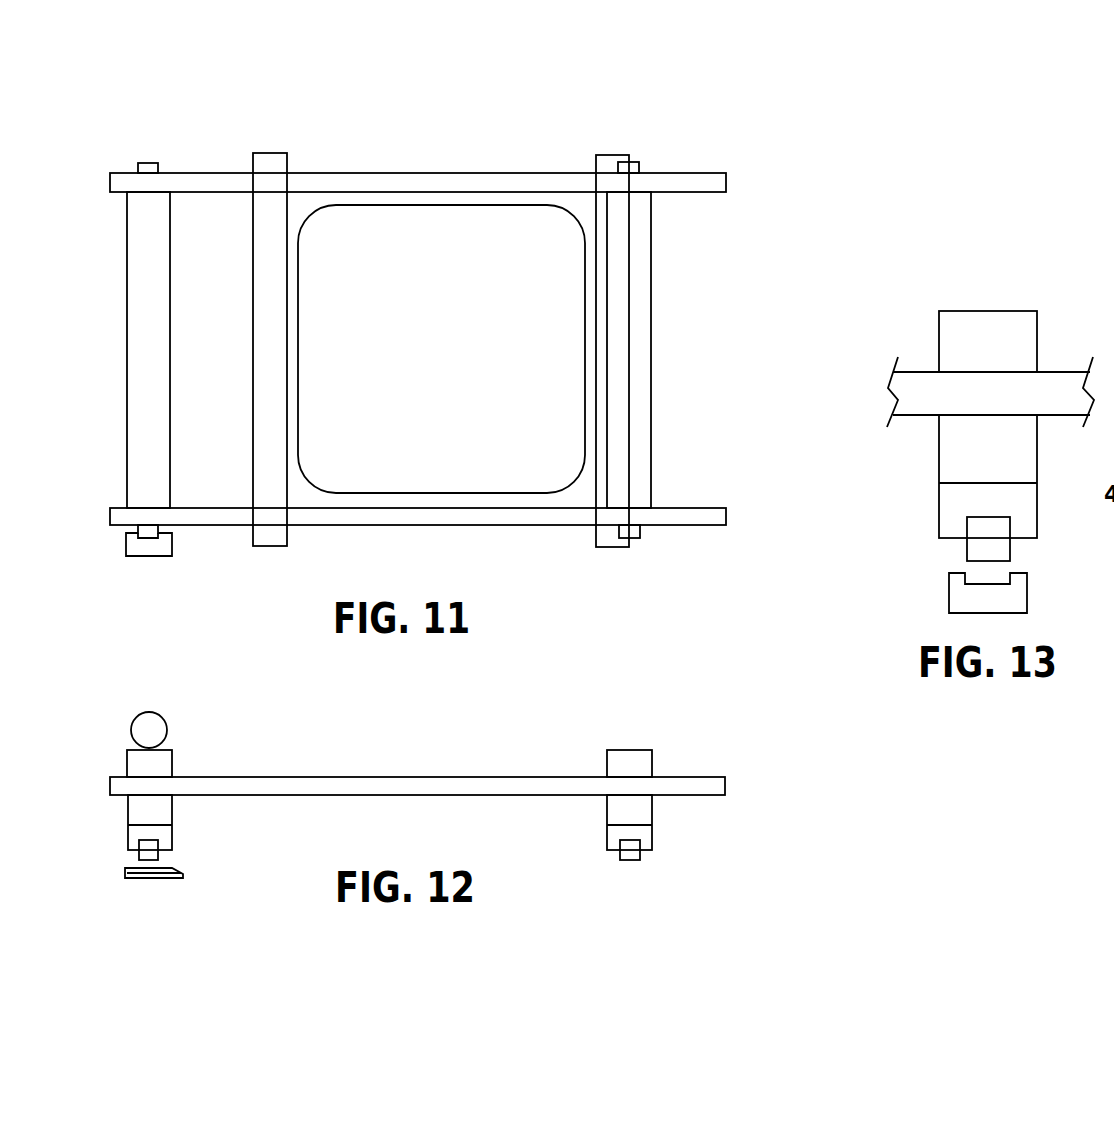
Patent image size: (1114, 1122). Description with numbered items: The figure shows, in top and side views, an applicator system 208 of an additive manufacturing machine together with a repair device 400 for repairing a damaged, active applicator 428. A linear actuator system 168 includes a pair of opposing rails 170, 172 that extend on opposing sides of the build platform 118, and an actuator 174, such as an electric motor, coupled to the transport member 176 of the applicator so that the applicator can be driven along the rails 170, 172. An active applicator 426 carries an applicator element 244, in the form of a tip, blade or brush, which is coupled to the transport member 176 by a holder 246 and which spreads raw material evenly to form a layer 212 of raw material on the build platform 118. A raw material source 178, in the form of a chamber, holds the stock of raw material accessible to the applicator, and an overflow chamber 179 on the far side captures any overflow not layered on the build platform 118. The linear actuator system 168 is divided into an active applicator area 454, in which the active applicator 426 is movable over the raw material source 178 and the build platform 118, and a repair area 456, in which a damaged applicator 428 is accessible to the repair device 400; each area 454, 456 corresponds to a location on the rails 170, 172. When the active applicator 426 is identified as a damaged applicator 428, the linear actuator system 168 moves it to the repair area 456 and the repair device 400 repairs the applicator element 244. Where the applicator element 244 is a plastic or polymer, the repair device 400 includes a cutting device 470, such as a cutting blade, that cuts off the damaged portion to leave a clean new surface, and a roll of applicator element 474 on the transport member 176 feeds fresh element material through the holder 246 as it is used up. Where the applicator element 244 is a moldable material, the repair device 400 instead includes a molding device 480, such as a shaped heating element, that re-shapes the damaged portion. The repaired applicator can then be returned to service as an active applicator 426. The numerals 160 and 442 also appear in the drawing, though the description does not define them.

In FIG. 11, the build platform 118 is at (568, 497).
In FIG. 11, the upper rail 160 is at (737, 180).
In FIG. 12, the linear actuator system 168 is at (722, 768).
In FIG. 11, the rail 170 is at (233, 183).
In FIG. 12, the rail 170 is at (417, 763).
In FIG. 11, the rail 172 is at (212, 513).
In FIG. 12, the rail 172 is at (350, 790).
In FIG. 11, the actuator 174 is at (637, 165).
In FIG. 12, the transport member 176 is at (140, 763).
In FIG. 11, the raw material source 178 is at (608, 160).
In FIG. 11, the overflow chamber 179 is at (278, 167).
In FIG. 11, the applicator system 208 is at (708, 115).
In FIG. 11, the layer of raw material 212 is at (377, 460).
In FIG. 12, the applicator element 244 is at (153, 852).
In FIG. 13, the applicator element 244 is at (982, 548).
In FIG. 12, the holder 246 is at (163, 830).
In FIG. 13, the holder 246 is at (965, 502).
In FIG. 11, the repair device 400 is at (135, 560).
In FIG. 12, the repair device 400 is at (120, 888).
In FIG. 13, the repair device 400 is at (858, 573).
In FIG. 11, the active applicator 426 is at (652, 250).
In FIG. 12, the active applicator 426 is at (617, 750).
In FIG. 11, the damaged applicator 428 is at (172, 243).
In FIG. 12, the damaged applicator 428 is at (175, 758).
In FIG. 13, the damaged applicator 428 is at (937, 450).
In FIG. 12, the upper end of second post 442 is at (632, 762).
In FIG. 11, the active applicator area 454 is at (633, 82).
In FIG. 11, the repair area 456 is at (198, 158).
In FIG. 12, the cutting device 470 is at (163, 878).
In FIG. 12, the roll of applicator element 474 is at (140, 733).
In FIG. 13, the molding device 480 is at (970, 593).